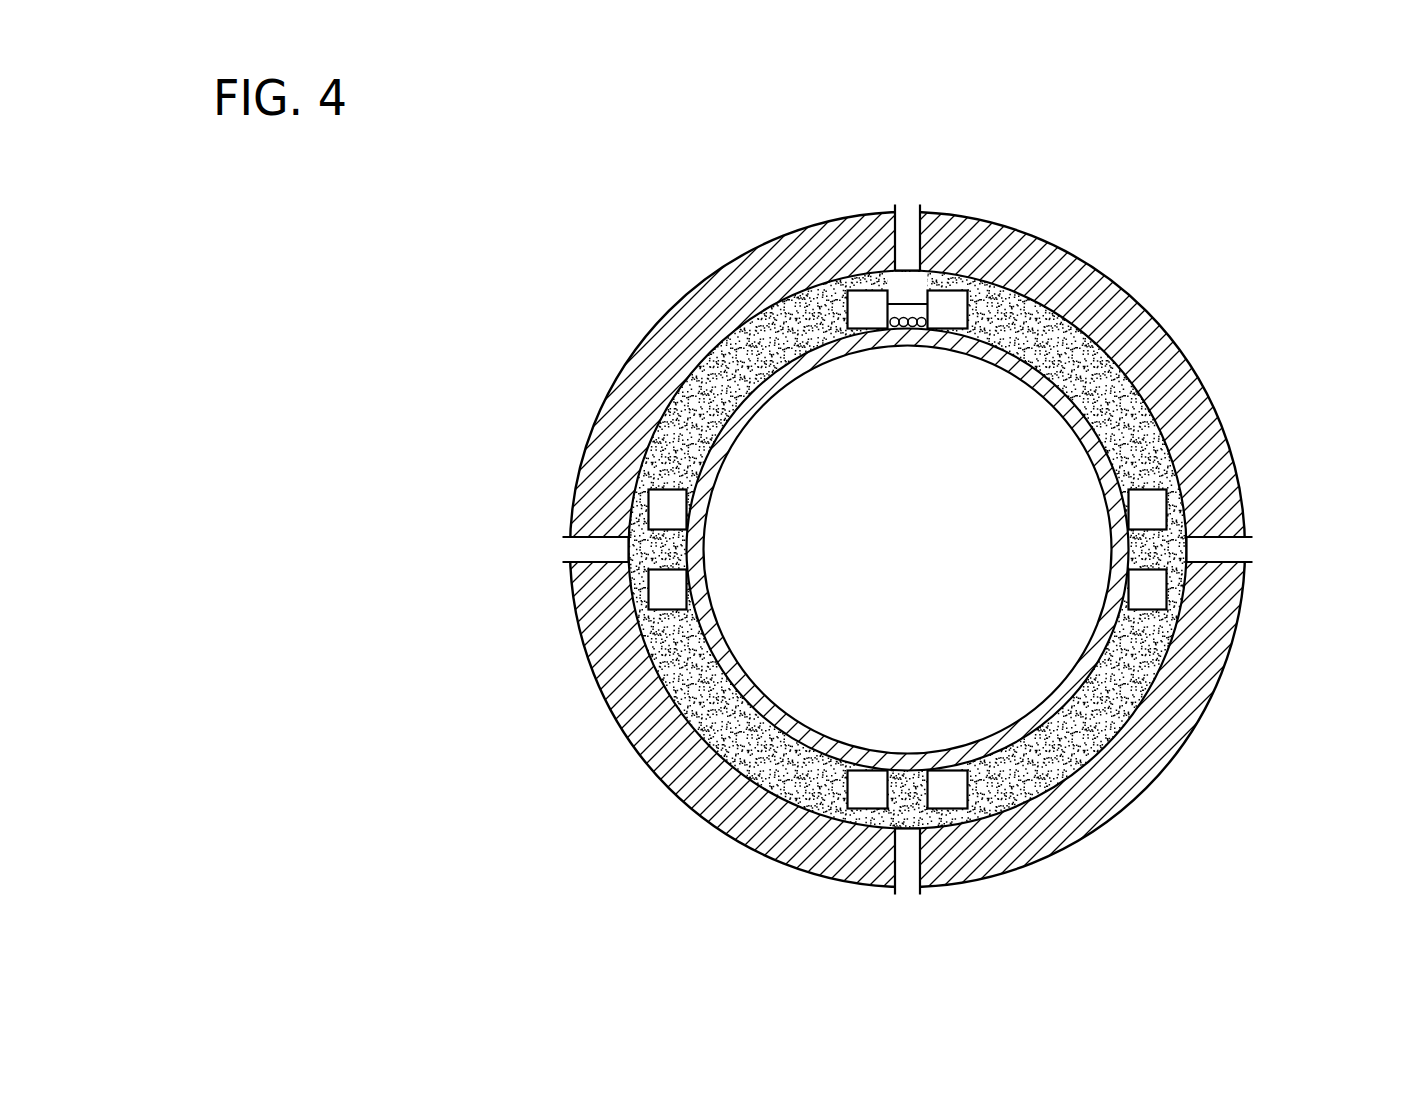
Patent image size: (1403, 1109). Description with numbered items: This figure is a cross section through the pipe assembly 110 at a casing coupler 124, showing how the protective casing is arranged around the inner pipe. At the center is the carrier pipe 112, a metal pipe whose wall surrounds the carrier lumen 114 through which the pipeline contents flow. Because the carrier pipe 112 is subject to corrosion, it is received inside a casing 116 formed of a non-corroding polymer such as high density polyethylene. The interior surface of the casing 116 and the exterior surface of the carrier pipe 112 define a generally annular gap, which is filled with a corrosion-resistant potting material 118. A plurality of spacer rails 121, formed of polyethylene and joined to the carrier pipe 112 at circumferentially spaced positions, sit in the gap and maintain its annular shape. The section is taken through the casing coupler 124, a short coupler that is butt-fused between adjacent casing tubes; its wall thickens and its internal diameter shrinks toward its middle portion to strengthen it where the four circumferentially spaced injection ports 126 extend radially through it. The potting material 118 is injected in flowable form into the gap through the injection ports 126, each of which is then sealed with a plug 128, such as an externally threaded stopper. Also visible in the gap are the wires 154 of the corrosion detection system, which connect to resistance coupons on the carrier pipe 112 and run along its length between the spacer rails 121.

The pipe assembly 110 is at (497, 864).
The carrier pipe 112 is at (1065, 773).
The carrier lumen 114 is at (915, 568).
The casing 116 is at (1146, 268).
The potting material 118 is at (1107, 720).
The spacer rails 121 is at (985, 290).
The casing coupler 124 is at (1173, 331).
The injection ports 126 is at (899, 215).
The plug 128 is at (920, 233).
The wires 154 is at (900, 304).